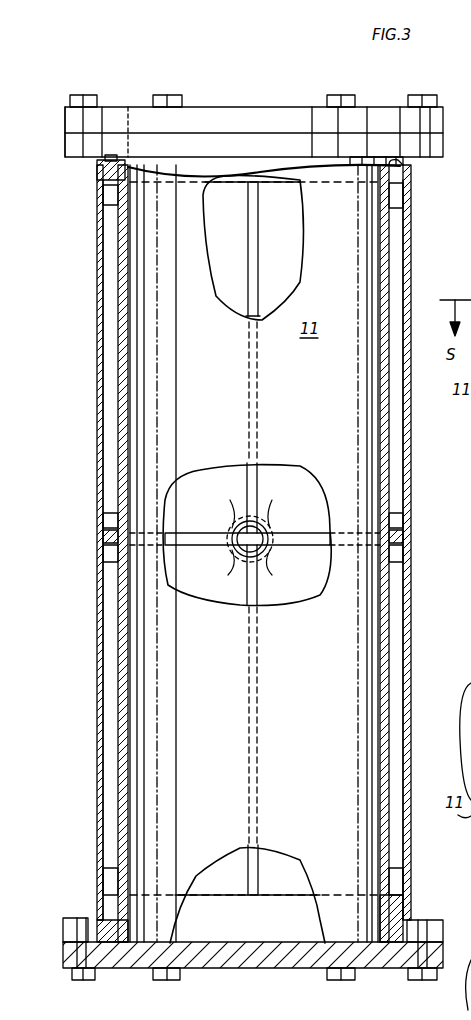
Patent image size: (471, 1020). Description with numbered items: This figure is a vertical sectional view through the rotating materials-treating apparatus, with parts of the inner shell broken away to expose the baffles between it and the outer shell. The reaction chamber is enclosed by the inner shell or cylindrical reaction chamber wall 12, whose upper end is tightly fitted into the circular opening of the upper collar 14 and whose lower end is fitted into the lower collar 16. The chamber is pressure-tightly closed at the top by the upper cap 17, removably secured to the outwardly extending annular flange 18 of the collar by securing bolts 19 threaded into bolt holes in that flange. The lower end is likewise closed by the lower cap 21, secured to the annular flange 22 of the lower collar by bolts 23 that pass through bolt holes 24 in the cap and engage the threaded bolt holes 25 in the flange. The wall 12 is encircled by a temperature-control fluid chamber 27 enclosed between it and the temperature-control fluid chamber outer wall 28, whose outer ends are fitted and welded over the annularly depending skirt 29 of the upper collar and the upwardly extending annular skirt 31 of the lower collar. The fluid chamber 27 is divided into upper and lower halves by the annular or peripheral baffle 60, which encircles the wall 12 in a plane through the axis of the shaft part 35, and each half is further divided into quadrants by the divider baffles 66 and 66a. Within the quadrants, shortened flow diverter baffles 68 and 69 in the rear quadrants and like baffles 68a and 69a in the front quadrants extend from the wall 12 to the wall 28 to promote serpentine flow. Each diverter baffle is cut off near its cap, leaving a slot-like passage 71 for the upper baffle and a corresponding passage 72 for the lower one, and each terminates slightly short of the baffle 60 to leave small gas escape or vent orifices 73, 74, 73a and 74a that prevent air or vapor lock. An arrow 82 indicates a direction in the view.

The inner shell or cylindrical reaction chamber wall 12 is at (122, 317).
The upper collar 14 is at (222, 130).
The lower collar 16 is at (387, 968).
The upper cap 17 is at (132, 122).
The annular flange 18 is at (72, 160).
The securing bolts 19 is at (328, 102).
The lower cap 21 is at (243, 970).
The annular flange 22 is at (66, 922).
The bolts 23 is at (76, 980).
The bolt holes 24 is at (78, 950).
The bolt holes 25 is at (433, 930).
The temperature-control fluid chamber 27 is at (320, 578).
The temperature-control fluid chamber outer wall 28 is at (97, 292).
The annularly depending skirt 29 is at (196, 172).
The upwardly extending annular skirt 31 is at (110, 898).
The shaft part 35 is at (265, 528).
The annular or peripheral baffle 60 is at (212, 540).
The divider baffle 66 is at (282, 224).
The divider baffle 66a is at (262, 860).
The flow diverter baffle 68 is at (400, 240).
The flow diverter baffle 68a is at (100, 412).
The flow diverter baffle 69 is at (400, 610).
The flow diverter baffle 69a is at (100, 770).
The slot-like passage 71 is at (405, 200).
The passage 72 is at (398, 880).
The gas escape or vent orifice 73 is at (396, 522).
The gas escape or vent orifice 73a is at (110, 520).
The gas escape or vent orifice 74 is at (397, 553).
The gas escape or vent orifice 74a is at (108, 553).
The flow direction 82 is at (455, 305).